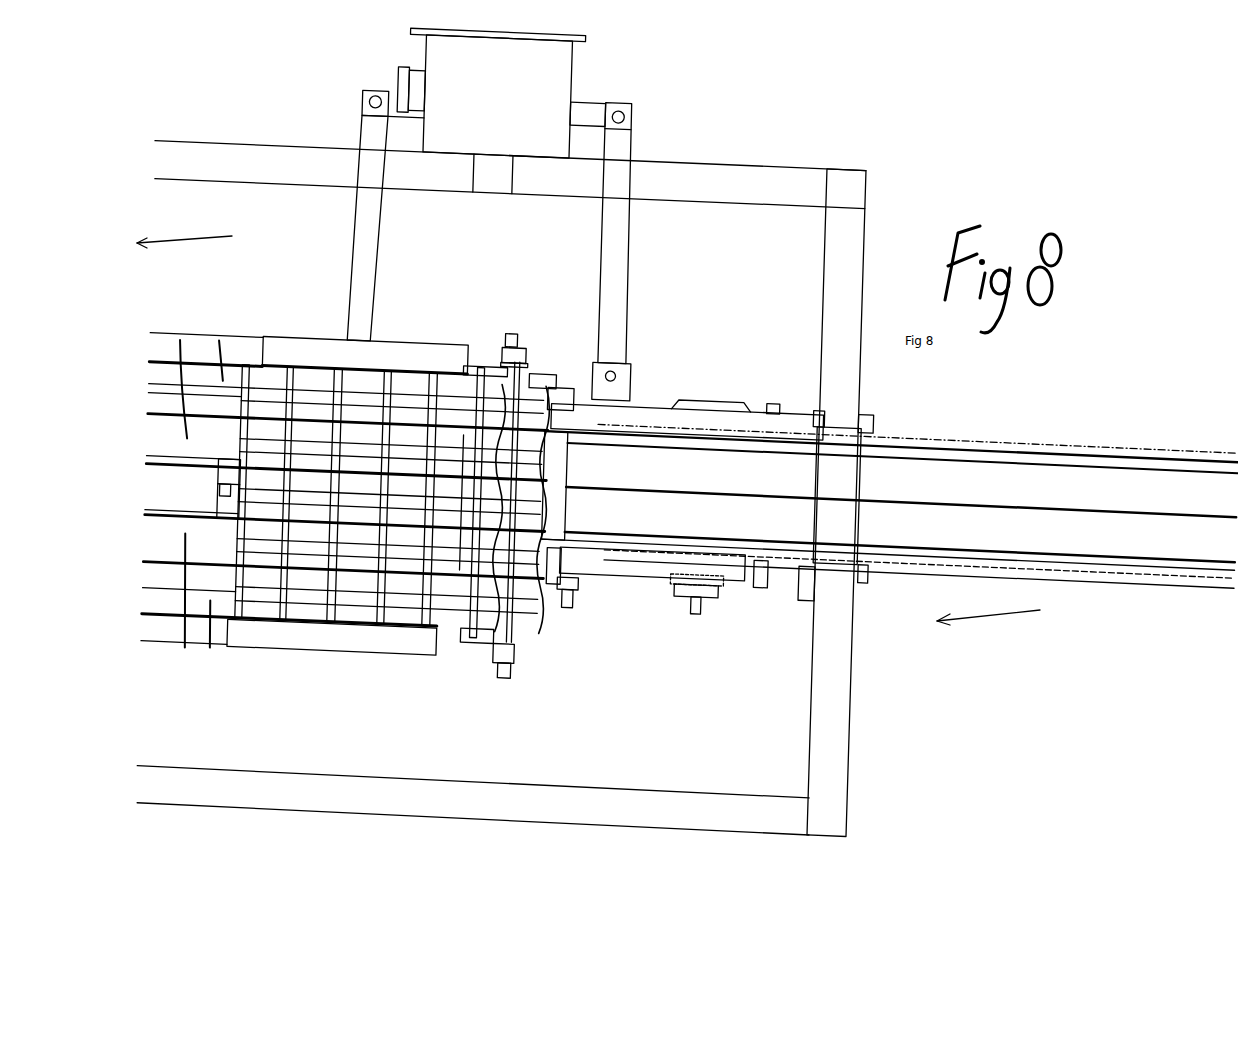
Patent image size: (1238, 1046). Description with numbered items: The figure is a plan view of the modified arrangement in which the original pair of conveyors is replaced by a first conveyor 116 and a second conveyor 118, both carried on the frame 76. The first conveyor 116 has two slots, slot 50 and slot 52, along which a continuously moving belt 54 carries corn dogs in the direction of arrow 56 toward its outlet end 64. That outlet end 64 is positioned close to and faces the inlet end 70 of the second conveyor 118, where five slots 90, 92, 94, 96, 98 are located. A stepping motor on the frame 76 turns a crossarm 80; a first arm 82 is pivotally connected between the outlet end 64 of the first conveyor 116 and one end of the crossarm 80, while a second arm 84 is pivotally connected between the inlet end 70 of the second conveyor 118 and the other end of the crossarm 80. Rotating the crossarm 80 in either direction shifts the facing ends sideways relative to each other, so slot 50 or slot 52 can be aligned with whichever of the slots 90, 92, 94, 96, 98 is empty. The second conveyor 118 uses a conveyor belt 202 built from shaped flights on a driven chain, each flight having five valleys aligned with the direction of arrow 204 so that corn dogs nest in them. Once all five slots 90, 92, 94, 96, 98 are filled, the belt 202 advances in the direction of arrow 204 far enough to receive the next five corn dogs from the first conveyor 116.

The slot 50 is at (1085, 483).
The slot 52 is at (1150, 540).
The belt 54 is at (890, 500).
The arrow 56 is at (1015, 626).
The outlet end 64 is at (676, 366).
The inlet end 70 is at (420, 317).
The frame 76 is at (792, 157).
The crossarm 80 is at (587, 100).
The first arm 82 is at (637, 251).
The second arm 84 is at (360, 243).
The slot 90 is at (214, 331).
The slot 92 is at (180, 294).
The slot 94 is at (178, 480).
The slot 96 is at (185, 652).
The slot 98 is at (212, 646).
The first conveyor 116 is at (776, 601).
The second conveyor 118 is at (352, 672).
The conveyor belt 202 is at (264, 370).
The arrow 204 is at (185, 225).